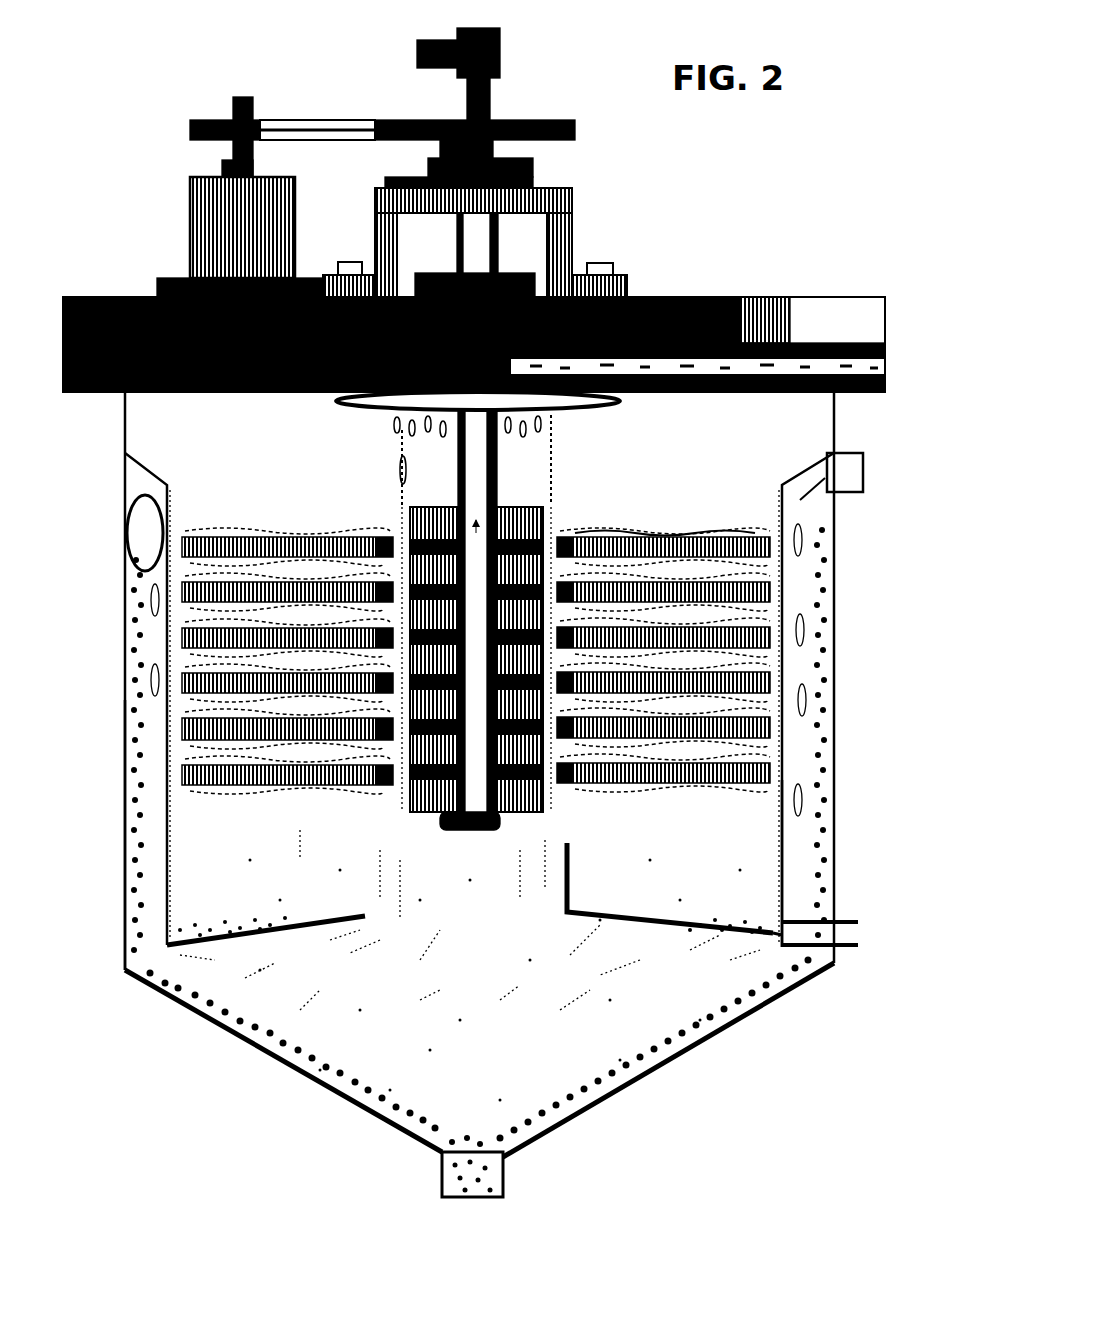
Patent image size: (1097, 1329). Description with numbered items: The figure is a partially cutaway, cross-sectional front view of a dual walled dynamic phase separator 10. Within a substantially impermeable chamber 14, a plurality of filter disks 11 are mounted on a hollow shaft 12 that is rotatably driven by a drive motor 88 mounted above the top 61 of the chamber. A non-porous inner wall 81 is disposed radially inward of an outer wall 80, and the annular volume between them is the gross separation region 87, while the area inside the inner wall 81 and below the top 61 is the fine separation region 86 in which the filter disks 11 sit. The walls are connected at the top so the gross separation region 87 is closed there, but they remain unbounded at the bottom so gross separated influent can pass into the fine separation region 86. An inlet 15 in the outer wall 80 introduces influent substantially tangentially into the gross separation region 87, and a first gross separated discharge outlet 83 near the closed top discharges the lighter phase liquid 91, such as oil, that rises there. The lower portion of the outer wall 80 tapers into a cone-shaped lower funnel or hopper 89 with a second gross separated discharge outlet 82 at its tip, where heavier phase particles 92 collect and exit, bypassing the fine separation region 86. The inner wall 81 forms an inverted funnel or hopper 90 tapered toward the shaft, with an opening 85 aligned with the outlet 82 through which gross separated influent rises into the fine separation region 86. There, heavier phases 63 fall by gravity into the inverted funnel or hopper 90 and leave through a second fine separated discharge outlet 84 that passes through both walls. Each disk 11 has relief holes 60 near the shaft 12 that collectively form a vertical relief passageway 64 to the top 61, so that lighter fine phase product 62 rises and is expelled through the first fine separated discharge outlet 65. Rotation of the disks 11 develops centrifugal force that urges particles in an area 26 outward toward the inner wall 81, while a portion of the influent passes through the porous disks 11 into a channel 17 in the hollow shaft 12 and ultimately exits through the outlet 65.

The dynamic phase separator 10 is at (762, 225).
The filter disks 11 is at (780, 548).
The hollow shaft 12 is at (497, 455).
The chamber 14 is at (834, 422).
The inlet 15 is at (138, 531).
The channel 17 is at (477, 487).
The area 26 is at (772, 607).
The relief holes 60 is at (560, 537).
The top 61 is at (843, 298).
The lighter fine phase separated product 62 is at (551, 458).
The heavier phases 63 is at (767, 913).
The relief passageway 64 is at (555, 803).
The first fine separated discharge outlet 65 is at (885, 370).
The outer wall 80 is at (127, 820).
The inner wall 81 is at (240, 940).
The second gross separated discharge outlet 82 is at (503, 1183).
The first gross separated discharge outlet 83 is at (863, 488).
The second fine separated discharge outlet 84 is at (877, 932).
The opening 85 is at (553, 883).
The fine separation region 86 is at (268, 460).
The gross separation region 87 is at (800, 827).
The drive motor 88 is at (190, 217).
The lower funnel or hopper 89 is at (627, 1085).
The inverted funnel or hopper 90 is at (305, 902).
The lighter phase liquid 91 is at (823, 500).
The heavier phase particles 92 is at (430, 1127).